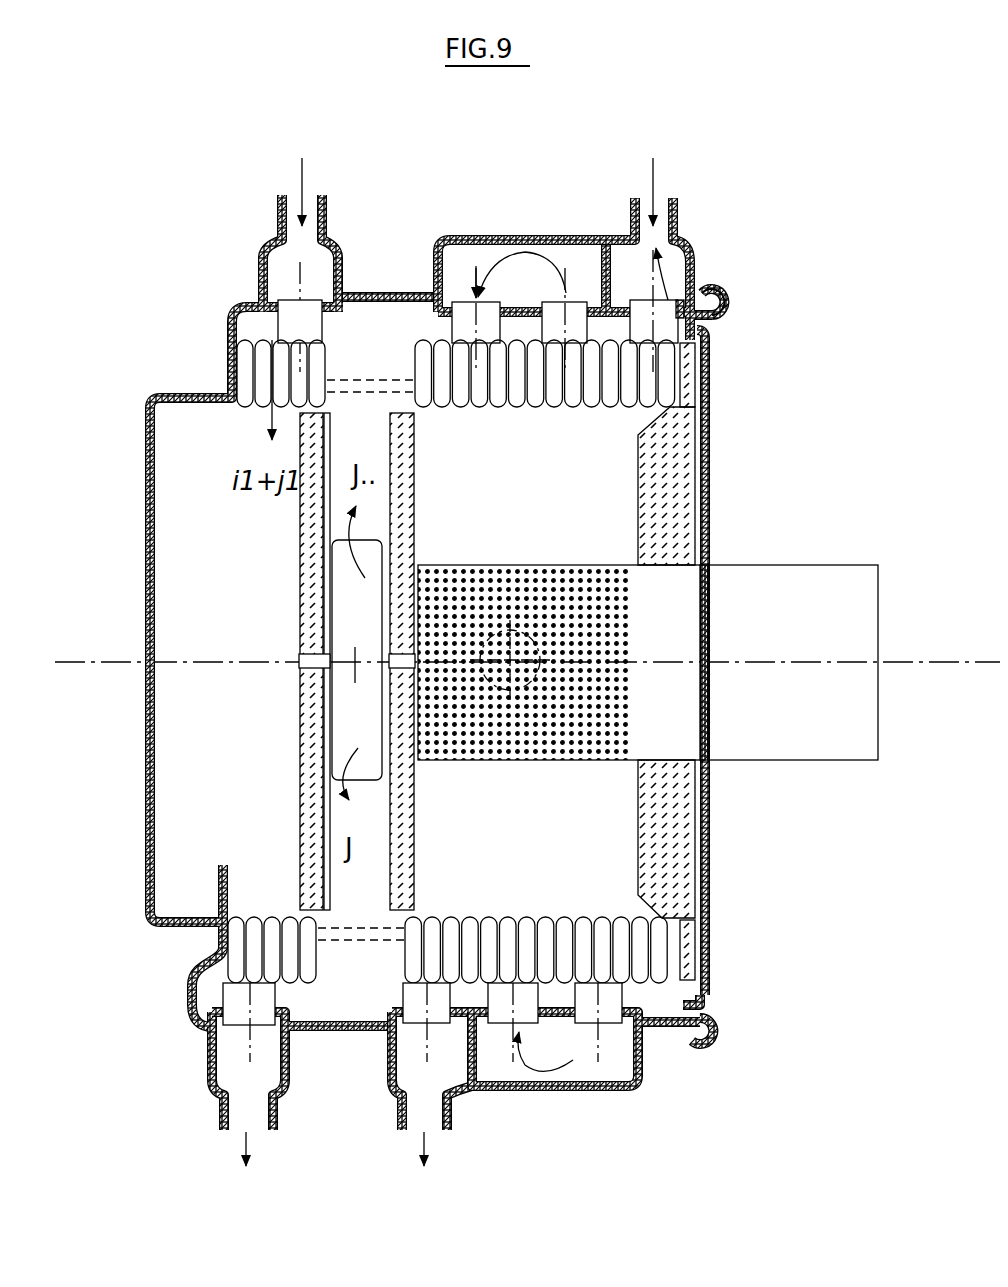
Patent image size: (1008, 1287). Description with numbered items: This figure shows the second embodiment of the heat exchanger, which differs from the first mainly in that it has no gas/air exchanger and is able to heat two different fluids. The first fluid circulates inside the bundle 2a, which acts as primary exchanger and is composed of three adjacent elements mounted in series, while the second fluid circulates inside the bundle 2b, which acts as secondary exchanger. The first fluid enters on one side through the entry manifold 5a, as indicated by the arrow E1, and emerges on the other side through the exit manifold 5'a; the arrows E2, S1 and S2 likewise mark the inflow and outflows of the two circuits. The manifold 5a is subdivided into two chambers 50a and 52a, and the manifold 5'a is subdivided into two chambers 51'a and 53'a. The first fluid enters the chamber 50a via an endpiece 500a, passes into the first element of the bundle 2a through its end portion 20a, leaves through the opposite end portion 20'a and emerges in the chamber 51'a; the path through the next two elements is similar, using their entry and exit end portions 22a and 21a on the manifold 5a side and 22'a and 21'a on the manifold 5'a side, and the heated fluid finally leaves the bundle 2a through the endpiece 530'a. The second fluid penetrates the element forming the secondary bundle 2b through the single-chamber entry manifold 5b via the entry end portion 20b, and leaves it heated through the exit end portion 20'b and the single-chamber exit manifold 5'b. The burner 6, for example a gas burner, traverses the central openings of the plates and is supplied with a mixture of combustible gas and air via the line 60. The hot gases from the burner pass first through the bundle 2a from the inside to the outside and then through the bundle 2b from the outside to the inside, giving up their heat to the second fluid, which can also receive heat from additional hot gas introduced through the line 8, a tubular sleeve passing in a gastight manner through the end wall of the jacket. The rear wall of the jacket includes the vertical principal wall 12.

The principal wall 12 is at (148, 788).
The second manifold 5b is at (256, 246).
The fluid flow arrow E2 is at (322, 265).
The entry manifold 5a is at (464, 238).
The chamber 52a is at (530, 238).
The entry end portion 22a is at (463, 312).
The exit end portion 21a is at (571, 313).
The fluid entry arrow E1 is at (664, 265).
The endpiece 500a is at (706, 232).
The chamber 50a is at (702, 266).
The end portion 20a is at (700, 322).
The entry end portion 20b is at (353, 367).
The bundle 2a is at (487, 906).
The bundle 2b is at (266, 906).
The line 8 is at (358, 615).
The burner 6 is at (515, 748).
The line 60 is at (784, 590).
The exit manifold 5'b is at (247, 1071).
The exit end portion 20'b is at (187, 1022).
The second fluid outlet S2 is at (268, 1152).
The chamber 53'a is at (395, 1071).
The endpiece 530'a is at (387, 1141).
The first fluid outlet S1 is at (446, 1154).
The exit manifold 5'a is at (592, 1101).
The exit end portion 22'a is at (468, 1085).
The entry end portion 21'a is at (570, 1068).
The chamber 51'a is at (600, 1112).
The end portion 20'a is at (718, 965).